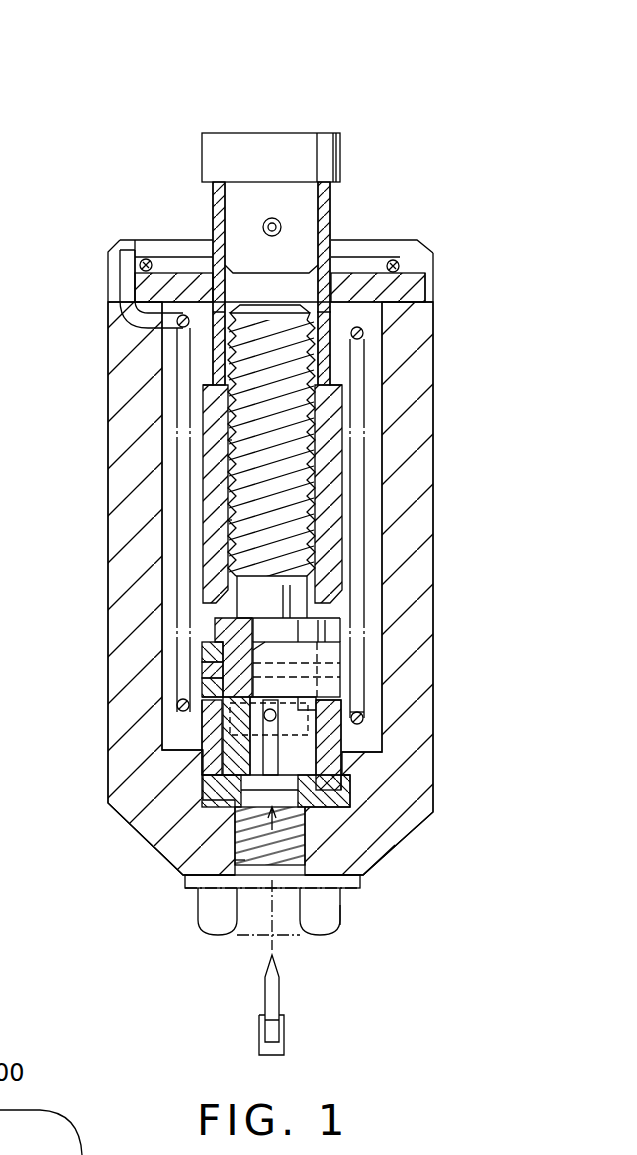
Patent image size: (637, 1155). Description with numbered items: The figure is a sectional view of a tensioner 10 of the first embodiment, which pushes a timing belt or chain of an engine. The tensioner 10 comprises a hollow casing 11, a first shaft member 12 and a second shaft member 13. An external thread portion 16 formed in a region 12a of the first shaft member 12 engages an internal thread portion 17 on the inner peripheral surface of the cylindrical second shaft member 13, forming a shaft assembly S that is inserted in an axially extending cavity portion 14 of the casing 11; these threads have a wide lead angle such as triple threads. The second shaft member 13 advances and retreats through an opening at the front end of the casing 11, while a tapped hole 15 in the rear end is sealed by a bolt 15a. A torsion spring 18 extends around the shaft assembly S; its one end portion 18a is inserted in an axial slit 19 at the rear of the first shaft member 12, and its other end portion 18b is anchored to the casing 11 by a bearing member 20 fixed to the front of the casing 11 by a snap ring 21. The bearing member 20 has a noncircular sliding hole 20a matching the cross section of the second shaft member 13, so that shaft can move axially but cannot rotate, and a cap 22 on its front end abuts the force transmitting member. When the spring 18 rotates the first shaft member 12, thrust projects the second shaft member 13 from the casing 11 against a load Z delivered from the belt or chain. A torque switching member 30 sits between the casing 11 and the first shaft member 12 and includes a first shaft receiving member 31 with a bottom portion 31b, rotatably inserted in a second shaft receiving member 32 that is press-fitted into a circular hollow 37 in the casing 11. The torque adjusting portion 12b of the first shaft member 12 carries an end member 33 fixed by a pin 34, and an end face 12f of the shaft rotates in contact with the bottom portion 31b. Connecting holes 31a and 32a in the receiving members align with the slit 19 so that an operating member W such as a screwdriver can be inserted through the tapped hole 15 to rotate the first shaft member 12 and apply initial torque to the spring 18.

The tensioner 10 is at (428, 94).
The hollow casing 11 is at (118, 468).
The first shaft member 12 is at (235, 585).
The region 12a is at (240, 455).
The torque adjusting portion 12b is at (240, 612).
The end face 12f is at (200, 805).
The second shaft member 13 is at (332, 216).
The cavity portion 14 is at (380, 386).
The tapped hole 15 is at (287, 860).
The bolt 15a is at (343, 922).
The external thread portion 16 is at (226, 418).
The internal thread portion 17 is at (232, 530).
The torsion spring 18 is at (360, 475).
The one end portion 18a is at (358, 735).
The other end portion 18b is at (128, 252).
The slit 19 is at (272, 758).
The bearing member 20 is at (412, 282).
The noncircular sliding hole 20a is at (196, 262).
The snap ring 21 is at (399, 262).
The cap 22 is at (318, 150).
The torque switching member 30 is at (359, 693).
The first shaft receiving member 31 is at (203, 738).
The connecting hole 31a is at (178, 868).
The bottom portion 31b is at (378, 852).
The second shaft receiving member 32 is at (240, 820).
The connecting hole 32a is at (262, 862).
The end member 33 is at (205, 660).
The pin 34 is at (352, 655).
The circular hollow 37 is at (225, 778).
The load Z is at (277, 120).
The shaft assembly S is at (357, 241).
The operating member W is at (264, 1000).